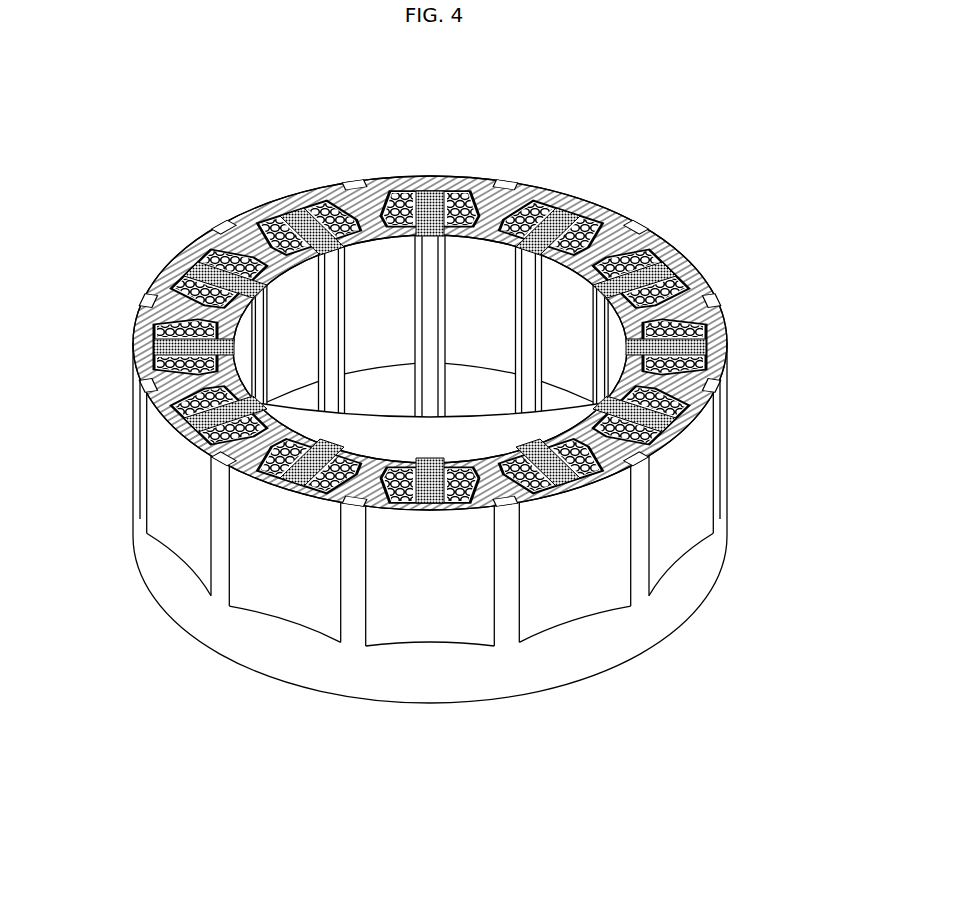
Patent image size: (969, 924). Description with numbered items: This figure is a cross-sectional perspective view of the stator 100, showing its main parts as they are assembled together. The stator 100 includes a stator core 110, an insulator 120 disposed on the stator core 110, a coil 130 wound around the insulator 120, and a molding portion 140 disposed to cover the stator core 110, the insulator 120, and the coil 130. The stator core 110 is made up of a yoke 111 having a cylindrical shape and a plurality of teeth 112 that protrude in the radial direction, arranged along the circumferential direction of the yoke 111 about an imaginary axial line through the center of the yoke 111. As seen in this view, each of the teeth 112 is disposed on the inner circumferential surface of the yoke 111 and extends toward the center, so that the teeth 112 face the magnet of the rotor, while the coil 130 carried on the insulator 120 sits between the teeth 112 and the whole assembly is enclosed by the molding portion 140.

The stator 100 is at (98, 101).
The stator core 110 is at (762, 228).
The yoke 111 is at (695, 278).
The teeth 112 is at (667, 307).
The insulator 120 is at (392, 181).
The coil 130 is at (185, 258).
The molding portion 140 is at (560, 200).